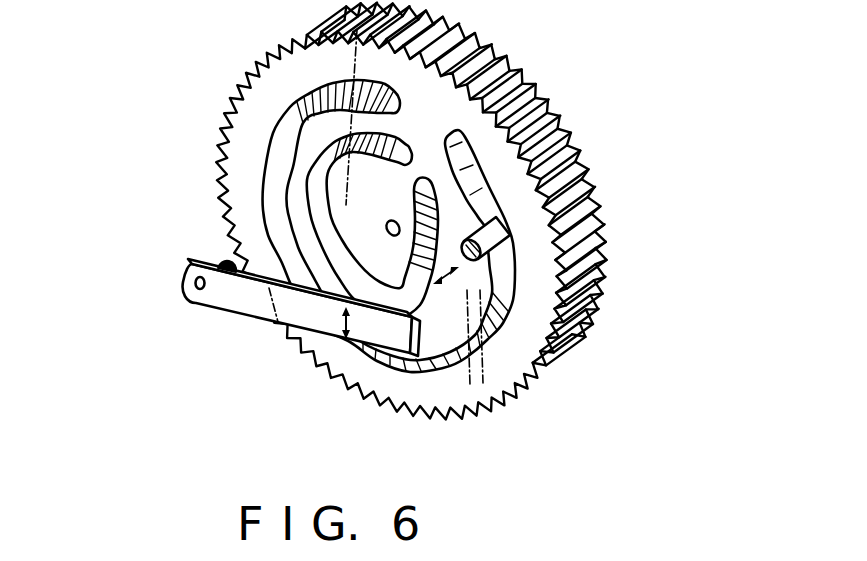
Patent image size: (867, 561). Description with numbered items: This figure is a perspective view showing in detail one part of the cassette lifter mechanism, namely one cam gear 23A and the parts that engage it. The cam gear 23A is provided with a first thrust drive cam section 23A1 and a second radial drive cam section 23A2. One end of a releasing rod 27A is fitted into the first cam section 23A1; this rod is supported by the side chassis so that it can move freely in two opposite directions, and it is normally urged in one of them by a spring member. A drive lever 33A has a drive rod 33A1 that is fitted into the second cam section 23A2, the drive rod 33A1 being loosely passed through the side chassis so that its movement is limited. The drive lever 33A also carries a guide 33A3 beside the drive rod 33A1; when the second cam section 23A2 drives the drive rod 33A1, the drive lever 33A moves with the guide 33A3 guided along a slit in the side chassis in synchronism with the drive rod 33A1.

The cam gear 23A is at (489, 403).
The first thrust drive cam section 23A1 is at (497, 313).
The second radial drive cam section 23A2 is at (400, 146).
The releasing rod 27A is at (510, 252).
The drive lever 33A is at (275, 314).
The drive rod 33A1 is at (377, 300).
The guide 33A3 is at (228, 258).